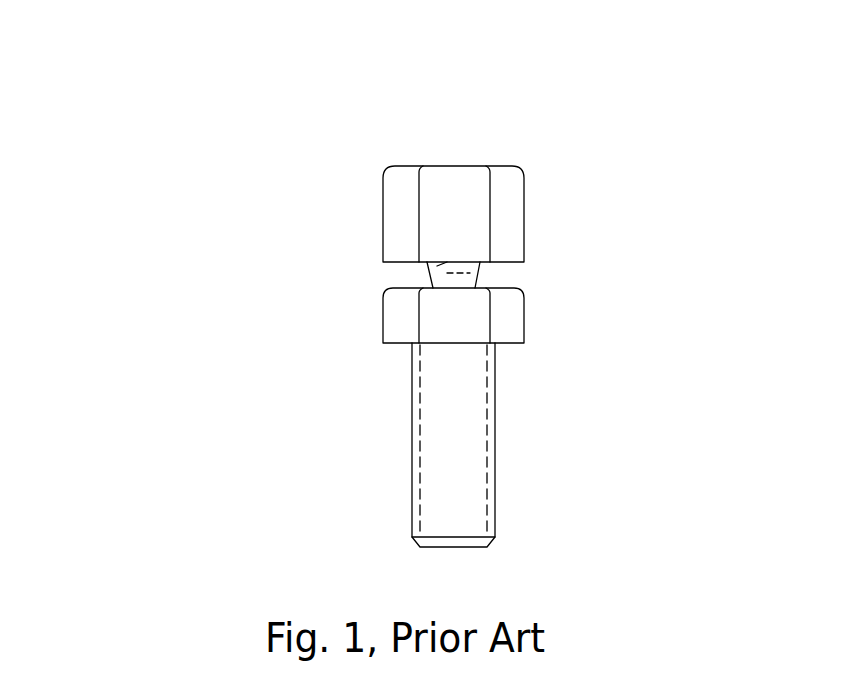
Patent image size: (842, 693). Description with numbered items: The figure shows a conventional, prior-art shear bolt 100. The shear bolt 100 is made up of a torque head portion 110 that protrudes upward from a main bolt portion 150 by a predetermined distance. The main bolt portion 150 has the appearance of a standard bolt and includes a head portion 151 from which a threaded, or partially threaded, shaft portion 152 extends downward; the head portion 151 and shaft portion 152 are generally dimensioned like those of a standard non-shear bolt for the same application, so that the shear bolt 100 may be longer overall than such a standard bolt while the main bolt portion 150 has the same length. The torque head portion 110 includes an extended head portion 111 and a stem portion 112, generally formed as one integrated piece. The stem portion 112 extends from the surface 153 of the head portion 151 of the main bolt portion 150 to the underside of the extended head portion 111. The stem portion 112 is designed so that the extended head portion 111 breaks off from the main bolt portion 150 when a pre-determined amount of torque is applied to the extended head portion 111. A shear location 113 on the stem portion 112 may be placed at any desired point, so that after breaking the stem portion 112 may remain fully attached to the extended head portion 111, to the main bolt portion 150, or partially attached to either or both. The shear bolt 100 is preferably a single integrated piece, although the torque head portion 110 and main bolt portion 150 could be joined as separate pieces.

The shear bolt 100 is at (138, 88).
The torque head portion 110 is at (534, 288).
The extended head portion 111 is at (390, 193).
The stem portion 112 is at (430, 278).
The shear location 113 is at (446, 268).
The main bolt portion 150 is at (514, 547).
The head portion 151 is at (392, 326).
The shaft portion 152 is at (442, 494).
The surface 153 is at (499, 286).